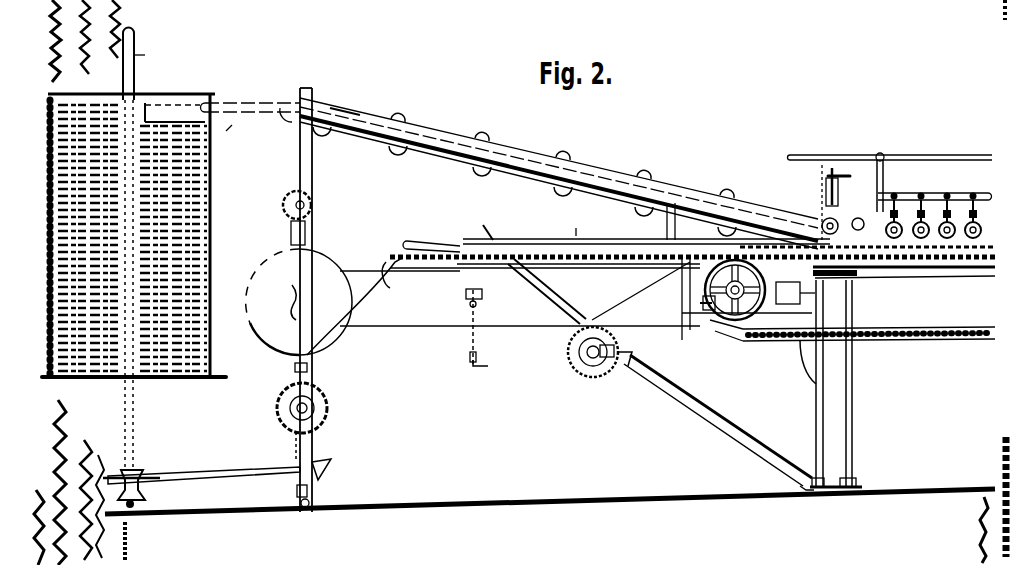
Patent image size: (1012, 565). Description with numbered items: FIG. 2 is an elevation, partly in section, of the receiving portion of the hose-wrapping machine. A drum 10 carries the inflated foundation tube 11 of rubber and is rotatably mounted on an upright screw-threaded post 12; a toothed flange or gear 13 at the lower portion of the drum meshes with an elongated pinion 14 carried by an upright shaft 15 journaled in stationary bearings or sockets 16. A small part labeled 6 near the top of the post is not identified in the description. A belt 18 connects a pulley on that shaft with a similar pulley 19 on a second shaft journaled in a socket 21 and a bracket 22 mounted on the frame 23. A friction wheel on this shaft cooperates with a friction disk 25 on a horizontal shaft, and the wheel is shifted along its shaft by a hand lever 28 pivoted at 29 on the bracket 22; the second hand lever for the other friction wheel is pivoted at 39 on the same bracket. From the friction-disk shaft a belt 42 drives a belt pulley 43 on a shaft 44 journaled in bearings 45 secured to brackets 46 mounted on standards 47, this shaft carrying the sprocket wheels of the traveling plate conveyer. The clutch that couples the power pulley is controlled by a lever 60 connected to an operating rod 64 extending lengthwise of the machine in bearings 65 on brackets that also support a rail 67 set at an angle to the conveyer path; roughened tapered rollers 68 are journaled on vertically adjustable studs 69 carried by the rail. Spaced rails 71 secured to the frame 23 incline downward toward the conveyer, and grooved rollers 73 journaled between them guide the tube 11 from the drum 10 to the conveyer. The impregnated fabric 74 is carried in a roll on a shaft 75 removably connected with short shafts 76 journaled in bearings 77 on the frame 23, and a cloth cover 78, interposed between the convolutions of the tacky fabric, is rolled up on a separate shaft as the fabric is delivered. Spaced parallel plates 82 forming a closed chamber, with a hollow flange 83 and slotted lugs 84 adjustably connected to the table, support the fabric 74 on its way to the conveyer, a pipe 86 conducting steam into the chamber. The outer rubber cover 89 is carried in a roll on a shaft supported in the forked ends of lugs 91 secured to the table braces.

The guide rod 6 is at (144, 55).
The drum 10 is at (251, 95).
The foundation tube 11 is at (603, 178).
The upright screw threaded post 12 is at (237, 129).
The toothed flange or gear 13 is at (135, 249).
The elongated pinion 14 is at (137, 434).
The upright shaft 15 is at (204, 470).
The stationary bearings or sockets 16 is at (314, 190).
The belt 18 is at (159, 489).
The pulley 19 is at (146, 502).
The socket 21 is at (296, 498).
The bracket 22 is at (326, 466).
The frame 23 is at (314, 92).
The friction disk 25 is at (299, 302).
The hand lever 28 is at (286, 382).
The pivot 29 is at (285, 447).
The pivot 39 is at (966, 340).
The belt 42 is at (600, 281).
The belt pulley 43 is at (641, 291).
The shaft 44 is at (722, 322).
The bearings 45 is at (781, 260).
The brackets 46 is at (793, 343).
The standards 47 is at (844, 430).
The lever 60 is at (699, 260).
The operating rod 64 is at (930, 156).
The bearings 65 is at (885, 181).
The rail 67 is at (956, 192).
The tapered or conical rollers 68 is at (958, 273).
The studs 69 is at (913, 250).
The spaced rails 71 is at (387, 143).
The grooved rollers 73 is at (490, 174).
The impregnated fabric 74 is at (354, 306).
The shaft 75 is at (322, 408).
The short shafts 76 is at (580, 225).
The bearings 77 is at (812, 214).
The cloth cover 78 is at (666, 222).
The spaced parallel plates 82 is at (747, 304).
The hollow flange 83 is at (770, 214).
The slotted lugs 84 is at (724, 422).
The pipe 86 is at (484, 327).
The rubber cover 89 is at (563, 326).
The lugs 91 is at (614, 374).